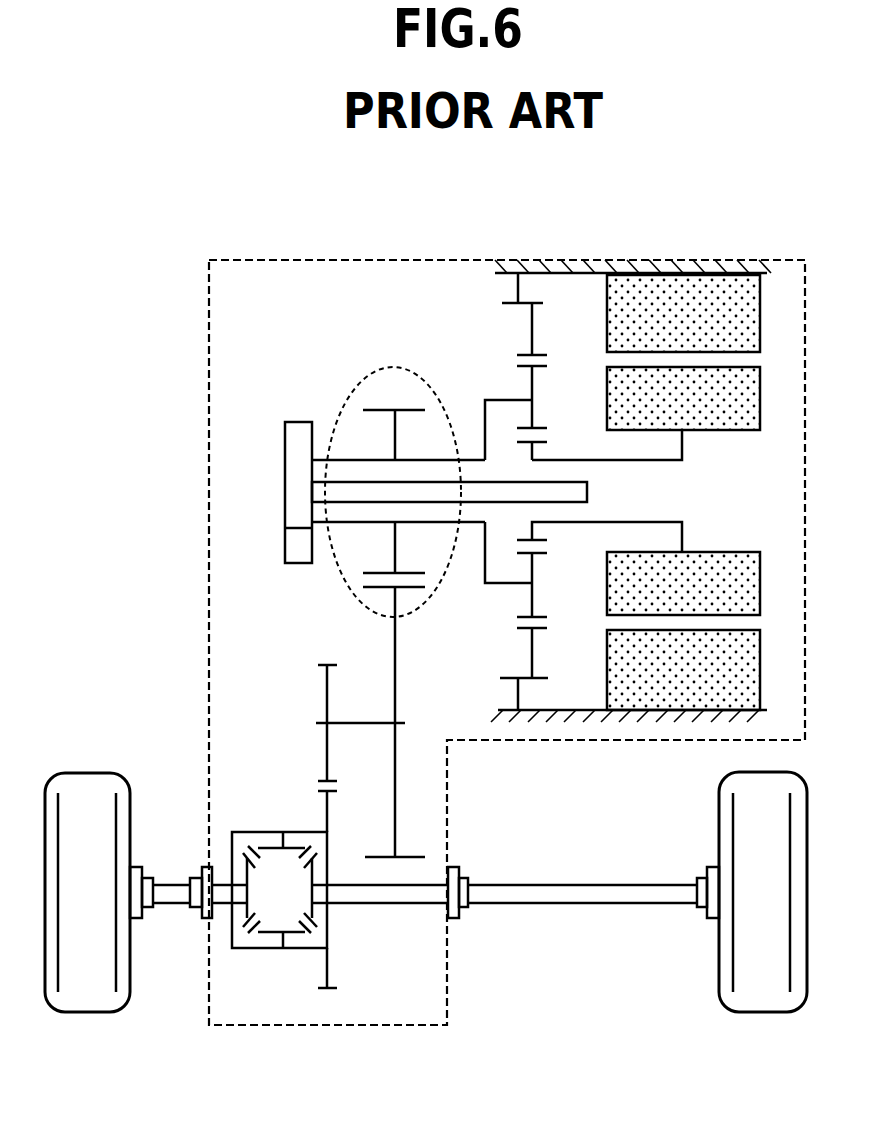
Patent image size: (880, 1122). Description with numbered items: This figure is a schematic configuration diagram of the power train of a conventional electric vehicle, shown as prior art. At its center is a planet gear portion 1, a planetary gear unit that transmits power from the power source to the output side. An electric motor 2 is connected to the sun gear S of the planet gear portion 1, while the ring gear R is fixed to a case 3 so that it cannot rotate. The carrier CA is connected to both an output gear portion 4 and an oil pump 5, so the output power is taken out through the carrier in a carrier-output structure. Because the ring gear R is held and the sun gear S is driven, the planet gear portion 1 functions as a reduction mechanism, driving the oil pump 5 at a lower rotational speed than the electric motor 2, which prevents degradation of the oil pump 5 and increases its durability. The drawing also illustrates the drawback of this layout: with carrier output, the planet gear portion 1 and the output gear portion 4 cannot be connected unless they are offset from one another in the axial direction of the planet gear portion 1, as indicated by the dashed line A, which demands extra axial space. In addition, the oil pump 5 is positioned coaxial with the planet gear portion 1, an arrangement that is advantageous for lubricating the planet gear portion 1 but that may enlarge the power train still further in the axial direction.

The planet gear portion 1 is at (515, 216).
The electric motor 2 is at (658, 459).
The case 3 is at (640, 262).
The output gear portion 4 is at (405, 410).
The oil pump 5 is at (293, 433).
The dashed line A is at (352, 388).
The ring gear R is at (535, 352).
The carrier CA is at (488, 398).
The sun gear S is at (538, 442).